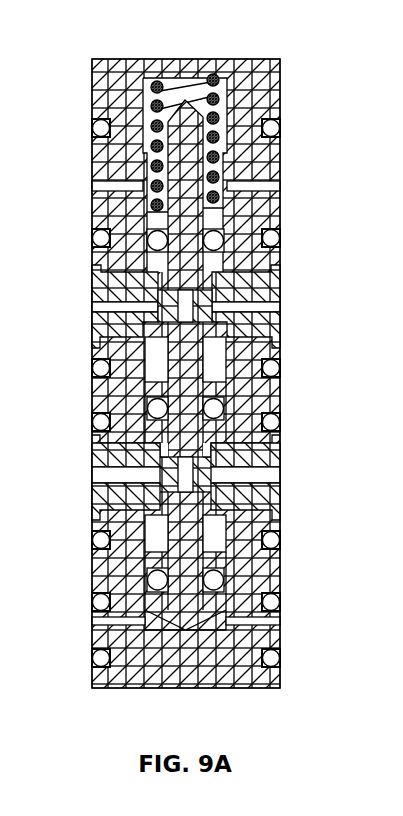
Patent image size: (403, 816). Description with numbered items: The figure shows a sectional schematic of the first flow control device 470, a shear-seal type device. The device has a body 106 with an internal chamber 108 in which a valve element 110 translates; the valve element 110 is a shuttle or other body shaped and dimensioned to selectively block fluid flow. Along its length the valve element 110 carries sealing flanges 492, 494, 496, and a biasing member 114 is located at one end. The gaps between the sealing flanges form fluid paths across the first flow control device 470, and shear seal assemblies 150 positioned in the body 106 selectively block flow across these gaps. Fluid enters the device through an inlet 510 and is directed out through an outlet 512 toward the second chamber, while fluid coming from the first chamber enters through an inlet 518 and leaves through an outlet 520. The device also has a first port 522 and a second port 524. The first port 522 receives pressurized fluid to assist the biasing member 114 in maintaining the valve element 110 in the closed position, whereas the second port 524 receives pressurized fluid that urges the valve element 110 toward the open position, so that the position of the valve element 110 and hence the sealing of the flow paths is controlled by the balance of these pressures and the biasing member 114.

The first flow control device 470 is at (276, 45).
The body 106 is at (98, 82).
The chamber 108 is at (262, 109).
The biasing member 114 is at (230, 178).
The valve element 110 is at (228, 197).
The sealing flange 492 is at (205, 235).
The shear seal assemblies 150 is at (205, 306).
The first port 522 is at (98, 183).
The outlet 512 is at (98, 304).
The inlet 510 is at (280, 306).
The sealing flange 494 is at (238, 378).
The inlet 518 is at (98, 476).
The outlet 520 is at (280, 478).
The sealing flange 496 is at (207, 560).
The second port 524 is at (98, 621).